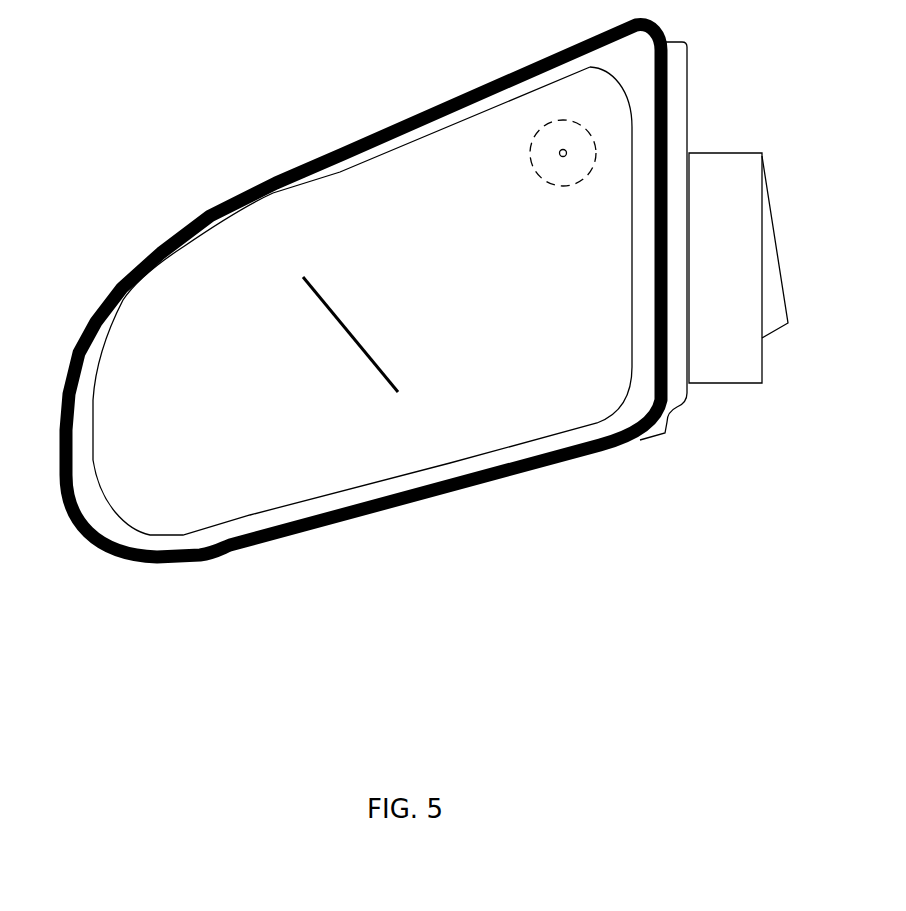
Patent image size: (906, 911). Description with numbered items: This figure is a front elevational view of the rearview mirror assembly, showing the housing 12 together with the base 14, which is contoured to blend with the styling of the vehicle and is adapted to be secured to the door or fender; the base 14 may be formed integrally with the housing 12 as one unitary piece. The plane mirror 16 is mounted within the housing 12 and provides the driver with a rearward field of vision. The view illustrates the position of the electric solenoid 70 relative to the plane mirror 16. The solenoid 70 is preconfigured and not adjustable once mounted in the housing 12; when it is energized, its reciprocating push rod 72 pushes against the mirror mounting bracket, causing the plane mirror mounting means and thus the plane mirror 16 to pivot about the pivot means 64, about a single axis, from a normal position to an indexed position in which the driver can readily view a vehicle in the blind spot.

The housing 12 is at (663, 413).
The base 14 is at (727, 175).
The plane mirror 16 is at (517, 420).
The pivot means 64 is at (330, 313).
The electric solenoid 70 is at (580, 138).
The reciprocating push rod 72 is at (560, 150).